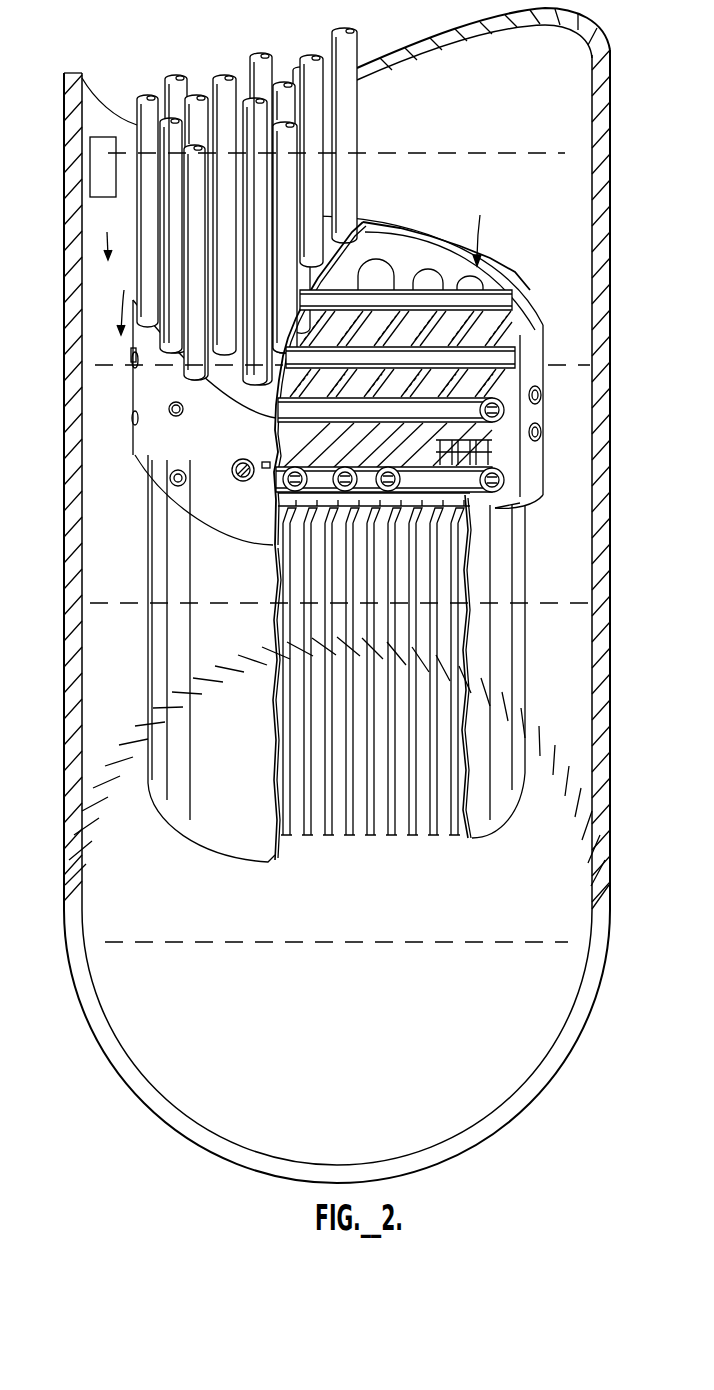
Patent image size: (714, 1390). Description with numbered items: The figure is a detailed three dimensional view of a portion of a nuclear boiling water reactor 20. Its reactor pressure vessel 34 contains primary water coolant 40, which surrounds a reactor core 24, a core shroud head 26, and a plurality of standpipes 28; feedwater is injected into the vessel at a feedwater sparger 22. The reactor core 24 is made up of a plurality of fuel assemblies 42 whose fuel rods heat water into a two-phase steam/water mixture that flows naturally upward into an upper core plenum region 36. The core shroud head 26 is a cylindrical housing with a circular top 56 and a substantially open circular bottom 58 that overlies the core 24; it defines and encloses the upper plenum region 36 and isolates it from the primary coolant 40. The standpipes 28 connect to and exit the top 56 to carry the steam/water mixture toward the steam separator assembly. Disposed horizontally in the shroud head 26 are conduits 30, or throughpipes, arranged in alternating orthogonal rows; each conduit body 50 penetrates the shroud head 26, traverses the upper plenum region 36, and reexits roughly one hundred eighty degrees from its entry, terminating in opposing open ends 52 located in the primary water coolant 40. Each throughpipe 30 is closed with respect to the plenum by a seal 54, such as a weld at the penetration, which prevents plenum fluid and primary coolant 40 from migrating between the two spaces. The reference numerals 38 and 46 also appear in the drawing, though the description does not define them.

The nuclear boiling water reactor 20 is at (78, 990).
The feedwater sparger 22 is at (98, 167).
The reactor core 24 is at (148, 682).
The core shroud head 26 is at (148, 440).
The standpipes 28 is at (355, 48).
The conduits 30 is at (385, 268).
The reactor pressure vessel 34 is at (95, 606).
The upper core plenum region 36 is at (486, 232).
The upper support plate 38 is at (98, 380).
The primary water coolant 40 is at (100, 290).
The fuel assemblies 42 is at (312, 840).
The alignment pin 46 is at (232, 474).
The conduit body 50 is at (492, 476).
The open ends 52 is at (176, 480).
The seal 54 is at (264, 470).
The top 56 is at (248, 398).
The bottom 58 is at (495, 540).